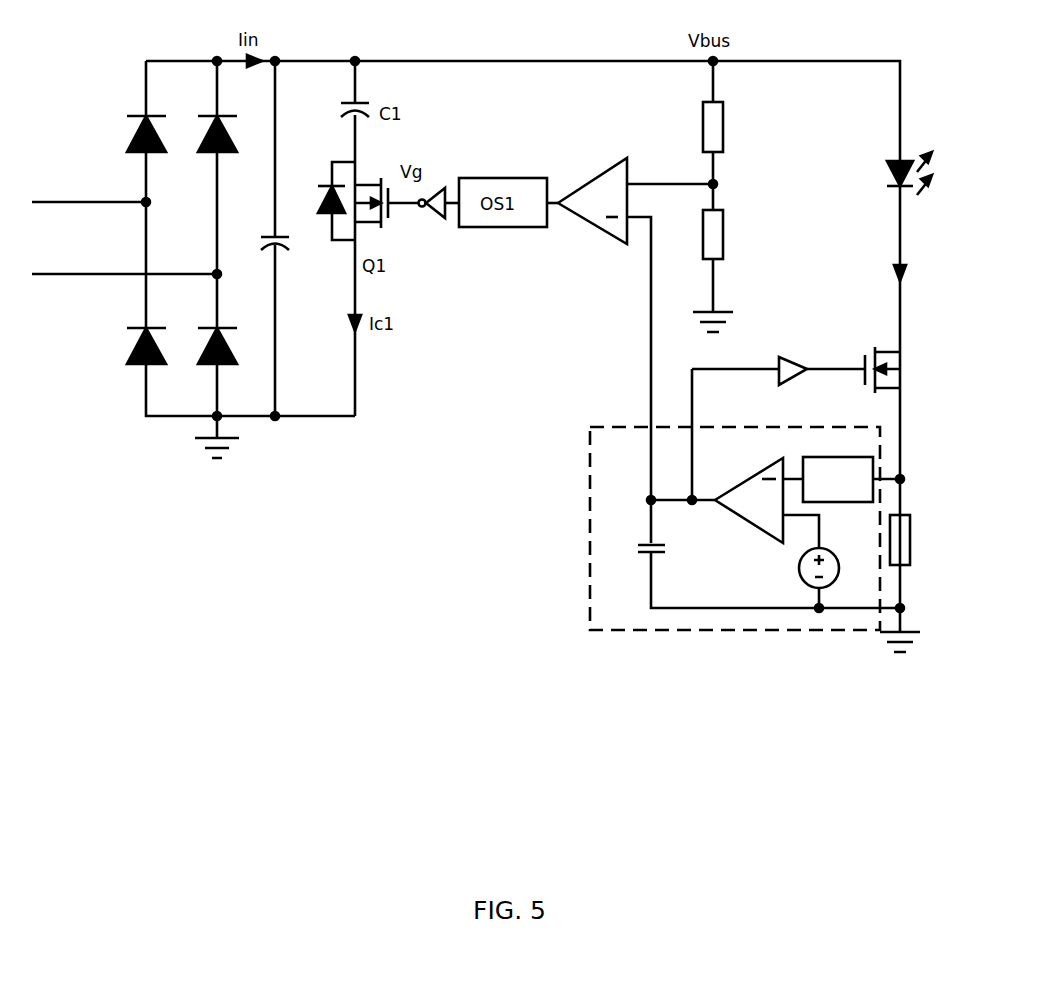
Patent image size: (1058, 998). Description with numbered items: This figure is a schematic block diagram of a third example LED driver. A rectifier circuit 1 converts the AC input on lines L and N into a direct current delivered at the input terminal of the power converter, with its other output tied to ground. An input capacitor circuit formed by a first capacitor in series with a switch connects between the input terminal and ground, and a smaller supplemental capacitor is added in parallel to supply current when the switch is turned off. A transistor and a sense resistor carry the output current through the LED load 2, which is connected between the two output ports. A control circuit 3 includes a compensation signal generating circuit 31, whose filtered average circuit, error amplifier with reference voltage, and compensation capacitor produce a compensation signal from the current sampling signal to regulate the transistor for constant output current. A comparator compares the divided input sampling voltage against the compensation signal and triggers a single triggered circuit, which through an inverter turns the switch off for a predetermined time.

The rectifier circuit 1 is at (168, 38).
The LED load 2 is at (838, 118).
The control circuit 3 is at (534, 393).
The compensation signal generating circuit 31 is at (590, 592).